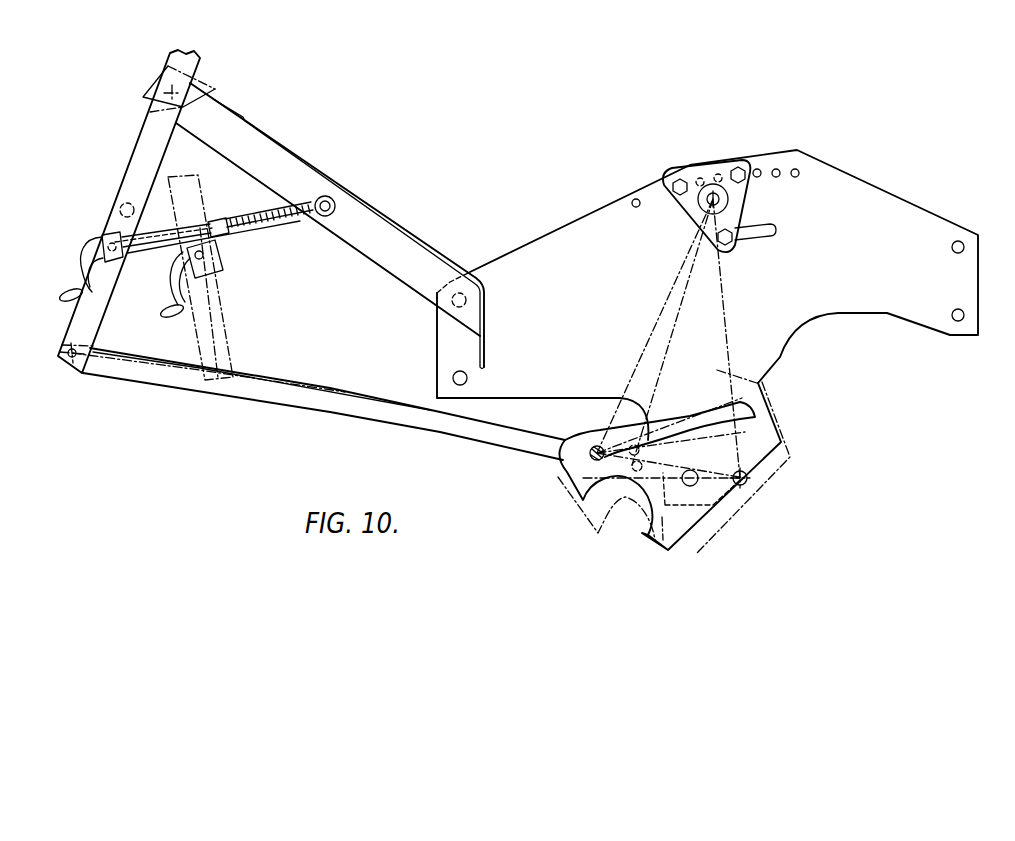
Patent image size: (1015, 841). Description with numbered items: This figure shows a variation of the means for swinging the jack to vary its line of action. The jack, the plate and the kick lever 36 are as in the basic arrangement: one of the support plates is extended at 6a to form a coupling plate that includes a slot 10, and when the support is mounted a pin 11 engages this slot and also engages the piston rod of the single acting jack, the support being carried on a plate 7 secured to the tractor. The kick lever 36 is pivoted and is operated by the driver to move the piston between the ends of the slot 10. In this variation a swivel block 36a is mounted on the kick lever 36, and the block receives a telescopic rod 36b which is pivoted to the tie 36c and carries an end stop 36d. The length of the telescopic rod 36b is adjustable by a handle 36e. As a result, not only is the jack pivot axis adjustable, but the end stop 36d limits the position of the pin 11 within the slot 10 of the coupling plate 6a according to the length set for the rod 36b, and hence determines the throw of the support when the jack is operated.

The kick lever 36 is at (141, 152).
The swivel block 36a is at (123, 257).
The telescopic rod 36b is at (243, 218).
The tie 36c is at (375, 227).
The end stop 36d is at (101, 236).
The handle 36e is at (66, 291).
The plate 7 is at (706, 334).
The slot 10 is at (703, 417).
The pin 11 is at (596, 445).
The coupling plate 6a is at (780, 432).